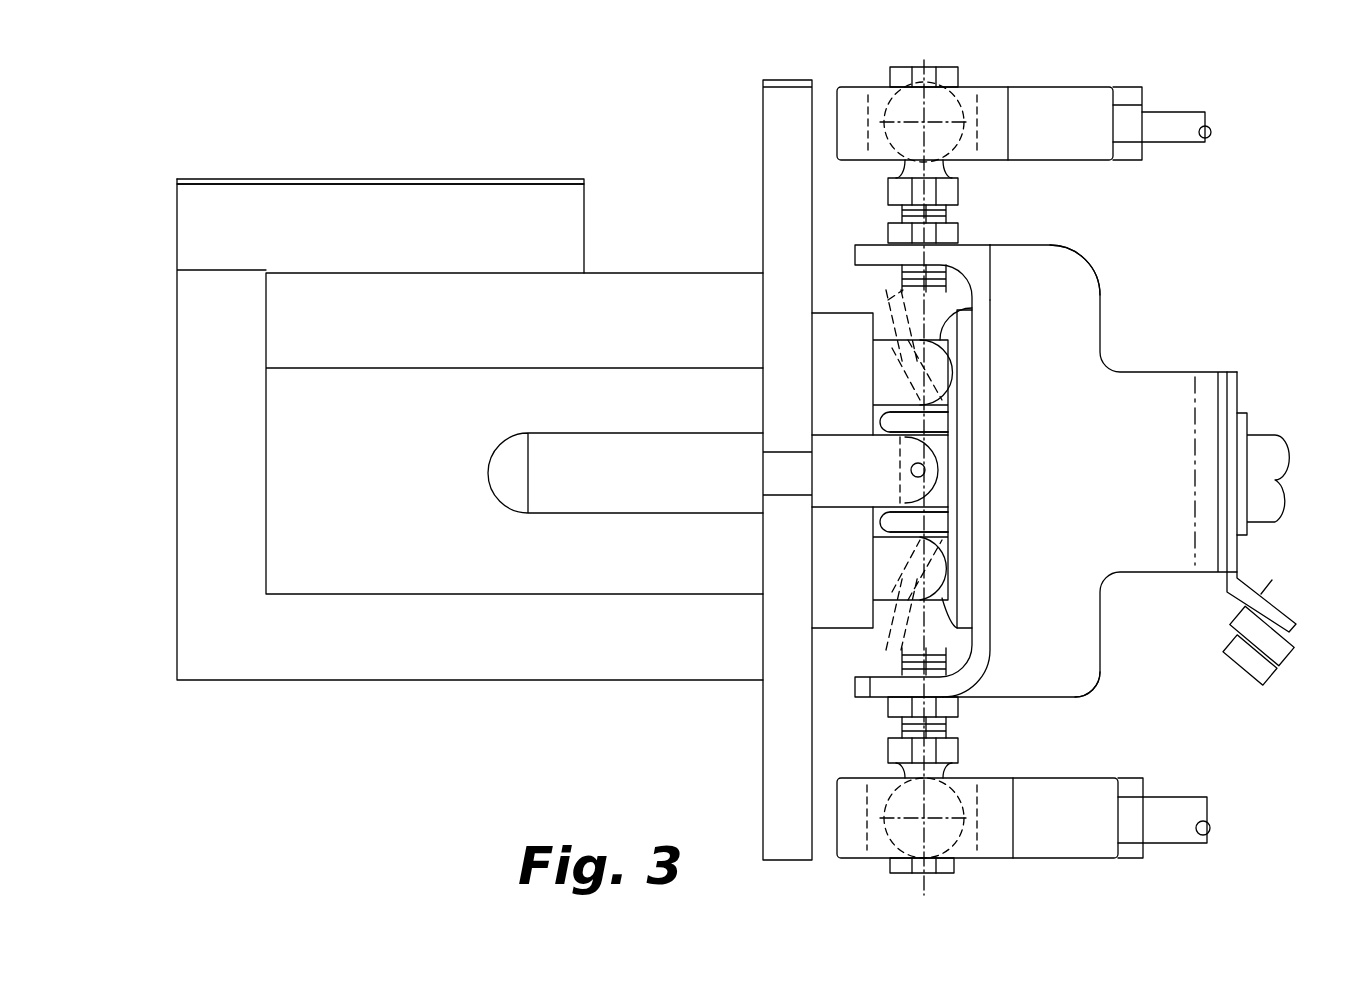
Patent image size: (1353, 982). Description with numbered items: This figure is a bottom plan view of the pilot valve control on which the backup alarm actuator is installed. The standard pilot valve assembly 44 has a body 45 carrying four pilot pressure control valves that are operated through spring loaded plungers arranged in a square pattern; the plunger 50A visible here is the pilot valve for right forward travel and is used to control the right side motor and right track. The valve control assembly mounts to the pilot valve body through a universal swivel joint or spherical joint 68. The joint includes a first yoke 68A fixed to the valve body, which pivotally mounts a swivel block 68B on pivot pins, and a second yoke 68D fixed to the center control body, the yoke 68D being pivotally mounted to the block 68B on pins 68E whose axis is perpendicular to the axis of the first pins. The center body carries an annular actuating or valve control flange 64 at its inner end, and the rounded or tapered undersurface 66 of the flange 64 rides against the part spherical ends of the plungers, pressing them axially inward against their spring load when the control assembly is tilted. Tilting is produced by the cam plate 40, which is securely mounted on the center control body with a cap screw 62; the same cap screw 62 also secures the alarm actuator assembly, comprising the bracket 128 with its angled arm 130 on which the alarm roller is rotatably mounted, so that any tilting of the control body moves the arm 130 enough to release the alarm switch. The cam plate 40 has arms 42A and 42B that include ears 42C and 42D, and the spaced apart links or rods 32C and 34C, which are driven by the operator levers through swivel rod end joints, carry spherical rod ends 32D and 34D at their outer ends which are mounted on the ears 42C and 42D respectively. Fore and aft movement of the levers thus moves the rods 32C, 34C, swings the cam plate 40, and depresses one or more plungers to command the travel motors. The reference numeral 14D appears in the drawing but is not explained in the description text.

The pivot pin 14D is at (928, 468).
The link or rod 32C is at (1172, 121).
The spherical rod end 32D is at (878, 96).
The link or rod 34C is at (1155, 830).
The spherical rod end 34D is at (960, 846).
The cam plate 40 is at (1115, 556).
The arm of cam plate 42A is at (1090, 286).
The arm of cam plate 42B is at (1058, 679).
The ear 42C is at (855, 257).
The ear 42D is at (855, 688).
The pilot valve assembly 44 is at (438, 654).
The body 45 is at (601, 284).
The plunger 50A is at (945, 378).
The cap screw 62 is at (1250, 433).
The annular actuating or valve control flange 64 is at (892, 296).
The rounded or tapered undersurface 66 is at (976, 279).
The universal swivel joint or spherical joint 68 is at (935, 459).
The first yoke 68A is at (872, 417).
The swivel block 68B is at (888, 512).
The second yoke 68D is at (925, 490).
The pins 68E is at (918, 470).
The bracket 128 is at (1240, 563).
The angled arm 130 is at (1236, 590).